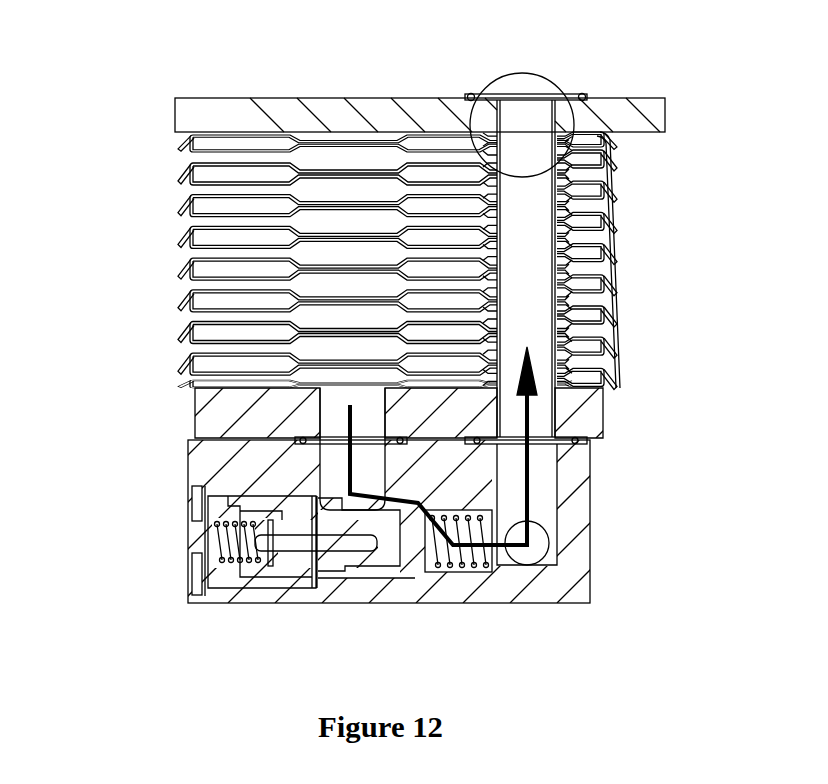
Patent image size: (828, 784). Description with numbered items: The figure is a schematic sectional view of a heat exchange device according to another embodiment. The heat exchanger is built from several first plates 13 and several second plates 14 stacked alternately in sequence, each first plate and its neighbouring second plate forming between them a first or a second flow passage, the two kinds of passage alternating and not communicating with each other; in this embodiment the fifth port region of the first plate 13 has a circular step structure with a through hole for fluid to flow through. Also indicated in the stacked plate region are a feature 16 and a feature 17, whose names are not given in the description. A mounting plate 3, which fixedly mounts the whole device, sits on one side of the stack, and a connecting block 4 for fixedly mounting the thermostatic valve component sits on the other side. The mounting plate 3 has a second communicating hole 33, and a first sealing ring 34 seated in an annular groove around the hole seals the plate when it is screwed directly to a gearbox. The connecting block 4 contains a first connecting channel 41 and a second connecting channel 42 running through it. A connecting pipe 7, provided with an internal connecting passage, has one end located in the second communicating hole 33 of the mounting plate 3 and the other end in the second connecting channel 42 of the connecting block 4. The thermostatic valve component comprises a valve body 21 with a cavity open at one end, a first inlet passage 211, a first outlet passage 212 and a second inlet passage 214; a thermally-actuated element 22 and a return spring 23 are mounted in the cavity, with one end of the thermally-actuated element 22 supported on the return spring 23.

The mounting plate 3 is at (220, 113).
The heat exchange fin stack 16 is at (337, 194).
The first sealing ring 34 is at (467, 96).
The second communicating hole 33 is at (570, 100).
The vertical flow pipe 17 is at (487, 213).
The second plate 14 is at (238, 213).
The first plate 13 is at (253, 290).
The connecting block 4 is at (220, 412).
The first connecting channel 41 is at (335, 397).
The second connecting channel 42 is at (557, 425).
The connecting pipe 7 is at (553, 420).
The first outlet passage 212 is at (540, 463).
The second inlet passage 214 is at (537, 547).
The first inlet passage 211 is at (333, 452).
The valve body 21 is at (292, 593).
The thermally-actuated element 22 is at (400, 543).
The return spring 23 is at (470, 560).